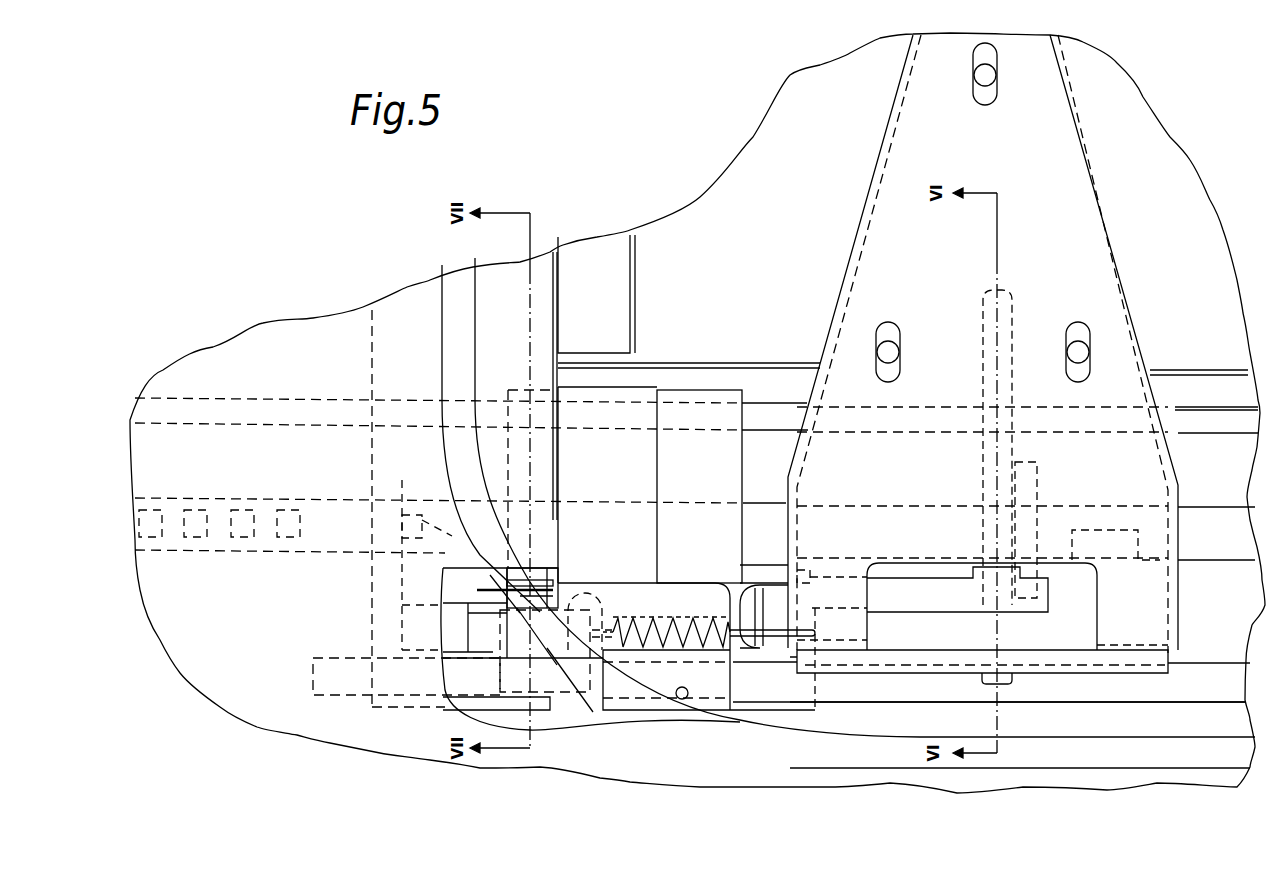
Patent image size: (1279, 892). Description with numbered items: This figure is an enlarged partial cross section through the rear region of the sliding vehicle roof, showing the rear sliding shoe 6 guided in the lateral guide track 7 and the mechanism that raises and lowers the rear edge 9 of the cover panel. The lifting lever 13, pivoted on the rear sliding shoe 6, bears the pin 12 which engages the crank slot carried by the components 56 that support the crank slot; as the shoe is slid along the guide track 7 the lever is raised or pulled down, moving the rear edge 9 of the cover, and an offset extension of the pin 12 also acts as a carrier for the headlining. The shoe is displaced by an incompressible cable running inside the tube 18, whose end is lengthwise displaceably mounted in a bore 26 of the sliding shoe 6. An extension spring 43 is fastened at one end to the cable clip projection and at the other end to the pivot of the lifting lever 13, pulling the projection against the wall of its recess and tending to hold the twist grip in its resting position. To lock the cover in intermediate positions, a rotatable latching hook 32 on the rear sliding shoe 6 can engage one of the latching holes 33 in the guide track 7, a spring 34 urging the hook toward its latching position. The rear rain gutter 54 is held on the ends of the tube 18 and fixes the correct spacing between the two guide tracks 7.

The rear sliding shoe 6 is at (620, 442).
The guide track 7 is at (765, 445).
The rear edge of the cover 9 is at (475, 316).
The pin 12 is at (1003, 632).
The lifting lever 13 is at (928, 597).
The tube 18 is at (1078, 687).
The bore 26 is at (677, 699).
The latching hook 32 is at (405, 515).
The latching holes 33 is at (290, 510).
The spring 34 is at (550, 562).
The extension spring 43 is at (673, 617).
The rear rain gutter 54 is at (372, 593).
The components supporting the crank slot 56 is at (1157, 632).